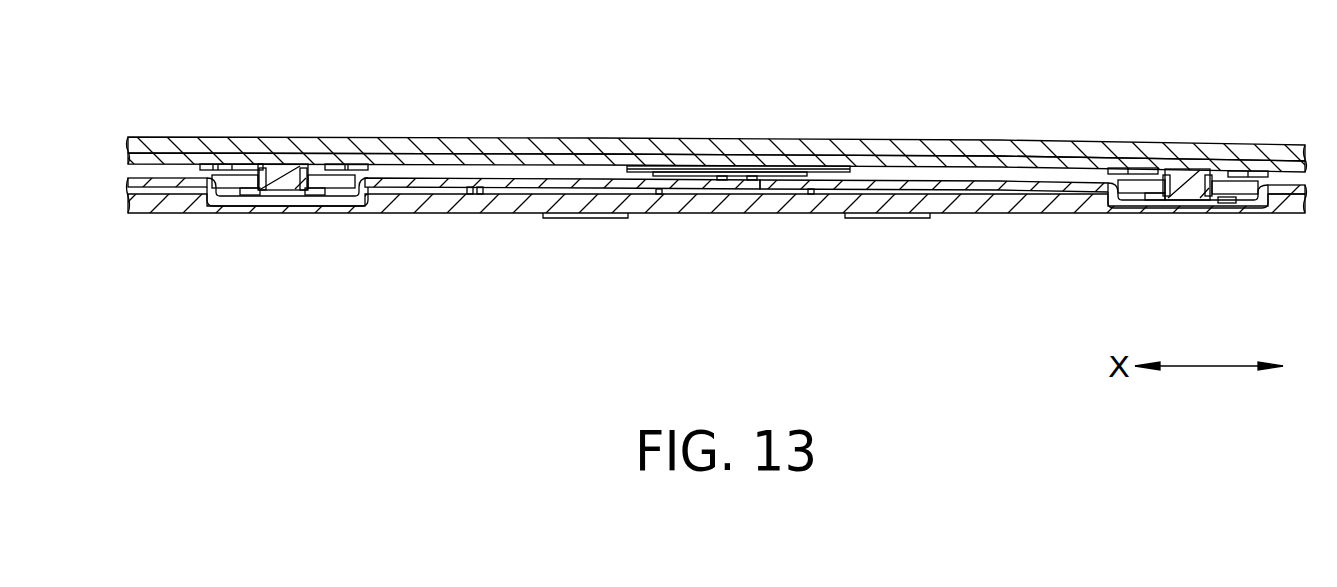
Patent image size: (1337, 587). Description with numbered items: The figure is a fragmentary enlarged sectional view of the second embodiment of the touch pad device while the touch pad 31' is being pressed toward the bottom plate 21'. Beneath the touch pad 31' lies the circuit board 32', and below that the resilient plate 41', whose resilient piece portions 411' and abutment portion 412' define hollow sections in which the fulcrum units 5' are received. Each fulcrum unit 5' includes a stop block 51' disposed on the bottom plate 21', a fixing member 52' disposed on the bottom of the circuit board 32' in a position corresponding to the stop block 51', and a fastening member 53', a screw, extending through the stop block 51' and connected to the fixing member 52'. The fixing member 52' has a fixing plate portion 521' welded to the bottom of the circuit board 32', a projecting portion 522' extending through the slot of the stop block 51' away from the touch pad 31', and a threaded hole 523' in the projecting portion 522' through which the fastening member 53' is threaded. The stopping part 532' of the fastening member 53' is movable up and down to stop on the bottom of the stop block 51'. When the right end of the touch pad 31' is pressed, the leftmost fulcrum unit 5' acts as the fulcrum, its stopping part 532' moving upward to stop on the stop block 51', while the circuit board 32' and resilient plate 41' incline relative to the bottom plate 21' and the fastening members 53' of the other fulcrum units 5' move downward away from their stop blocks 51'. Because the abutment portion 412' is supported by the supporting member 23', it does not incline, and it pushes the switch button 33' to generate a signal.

The bottom plate 21' is at (716, 250).
The supporting member 23' is at (730, 229).
The touch pad 31' is at (716, 108).
The circuit board 32' is at (716, 122).
The switch button 33' is at (738, 119).
The resilient plate 41' is at (716, 184).
The resilient piece portions 411' is at (934, 236).
The abutment portion 412' is at (562, 232).
The fulcrum units 5' is at (711, 172).
The stop block 51' is at (740, 240).
The fixing member 52' is at (722, 109).
The fixing plate portion 521' is at (756, 134).
The projecting portion 522' is at (673, 134).
The threaded hole 523' is at (733, 136).
The fastening member 53' is at (711, 171).
The stopping part 532' is at (738, 257).